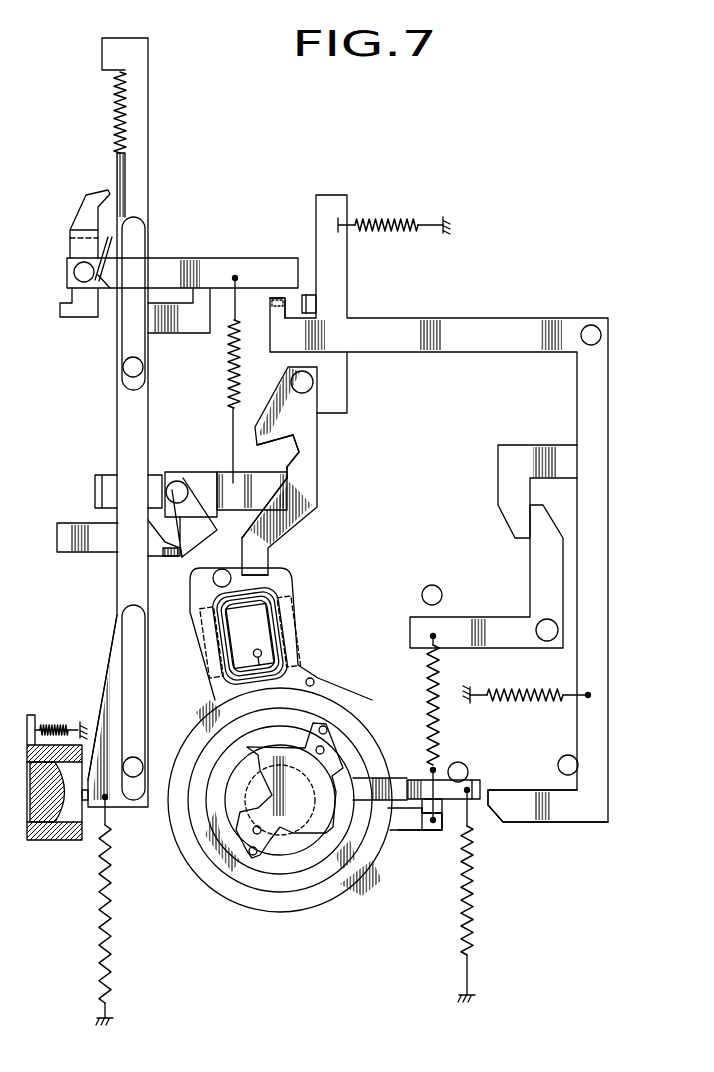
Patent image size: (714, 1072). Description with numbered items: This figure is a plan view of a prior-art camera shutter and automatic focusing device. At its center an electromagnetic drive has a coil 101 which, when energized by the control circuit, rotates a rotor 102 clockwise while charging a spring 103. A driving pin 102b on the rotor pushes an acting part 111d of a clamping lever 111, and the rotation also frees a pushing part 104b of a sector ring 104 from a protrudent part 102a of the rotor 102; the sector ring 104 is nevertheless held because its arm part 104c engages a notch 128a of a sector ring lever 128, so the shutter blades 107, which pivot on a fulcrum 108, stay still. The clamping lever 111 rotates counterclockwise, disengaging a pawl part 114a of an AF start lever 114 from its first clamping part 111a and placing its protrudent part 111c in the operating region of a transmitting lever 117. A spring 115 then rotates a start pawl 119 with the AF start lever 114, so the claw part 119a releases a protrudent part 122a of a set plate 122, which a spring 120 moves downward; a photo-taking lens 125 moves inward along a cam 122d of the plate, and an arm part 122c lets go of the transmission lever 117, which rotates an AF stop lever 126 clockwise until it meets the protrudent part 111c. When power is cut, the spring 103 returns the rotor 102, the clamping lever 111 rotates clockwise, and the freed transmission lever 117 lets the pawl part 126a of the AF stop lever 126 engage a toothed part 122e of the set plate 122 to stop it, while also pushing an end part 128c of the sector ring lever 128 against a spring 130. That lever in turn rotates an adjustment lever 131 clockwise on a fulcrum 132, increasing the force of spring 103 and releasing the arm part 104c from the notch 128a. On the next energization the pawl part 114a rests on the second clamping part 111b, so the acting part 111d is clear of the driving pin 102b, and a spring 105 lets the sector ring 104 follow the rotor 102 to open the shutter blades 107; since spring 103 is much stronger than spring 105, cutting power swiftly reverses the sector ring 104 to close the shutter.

The coil 101 is at (266, 589).
The rotor 102 is at (383, 856).
The protrudent part of rotor 102a is at (423, 826).
The driving pin 102b is at (212, 603).
The spring 103 is at (440, 722).
The sector ring 104 is at (318, 858).
The pushing part of sector ring 104b is at (428, 770).
The arm part of sector ring 104c is at (467, 772).
The spring 105 is at (470, 897).
The shutter blades 107 is at (277, 790).
The fulcrum 108 is at (253, 832).
The clamping lever 111 is at (303, 503).
The first clamping part 111a is at (289, 469).
The second clamping part 111b is at (273, 459).
The protrudent part of clamping lever 111c is at (305, 305).
The acting part of clamping lever 111d is at (270, 562).
The AF start lever 114 is at (233, 483).
The pawl part of AF start lever 114a is at (289, 491).
The spring 115 is at (230, 380).
The transmitting lever 117 is at (243, 268).
The start pawl 119 is at (191, 515).
The claw part of start pawl 119a is at (200, 565).
The spring 120 is at (112, 940).
The set plate 122 is at (119, 423).
The protrudent part of set plate 122a is at (160, 556).
The arm part of set plate 122c is at (200, 287).
The cam 122d is at (103, 700).
The toothed part of set plate 122e is at (120, 112).
The photo-taking lens 125 is at (55, 836).
The AF stop lever 126 is at (88, 318).
The pawl part of AF stop lever 126a is at (103, 192).
The sector ring lever 128 is at (608, 612).
The notch part of sector ring lever 128a is at (490, 822).
The end part of sector ring lever 128c is at (278, 298).
The spring 130 is at (530, 697).
The adjustment lever 131 is at (497, 622).
The fulcrum 132 is at (548, 636).